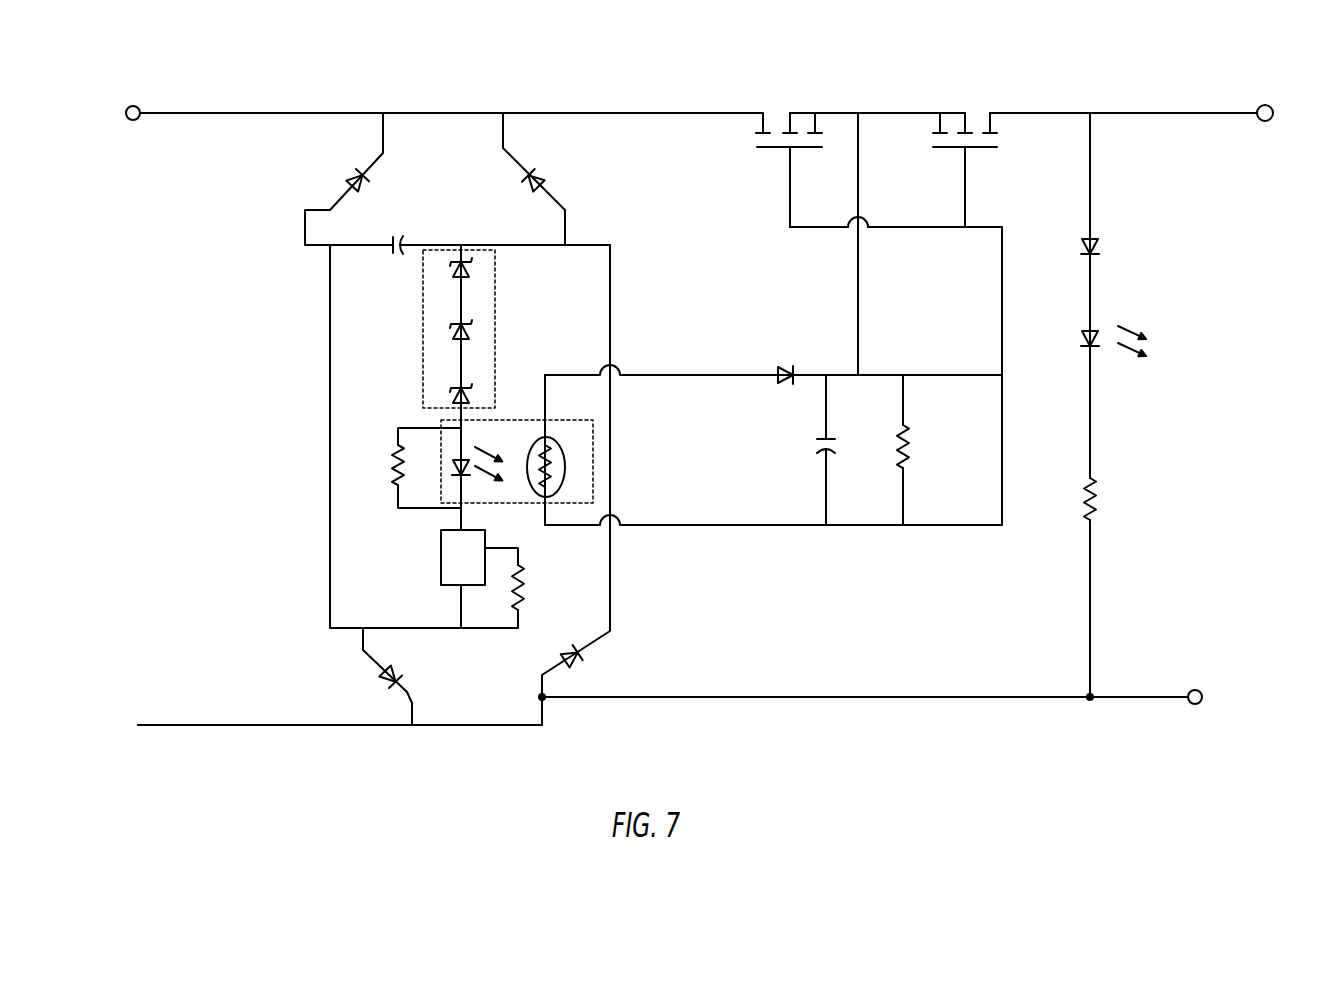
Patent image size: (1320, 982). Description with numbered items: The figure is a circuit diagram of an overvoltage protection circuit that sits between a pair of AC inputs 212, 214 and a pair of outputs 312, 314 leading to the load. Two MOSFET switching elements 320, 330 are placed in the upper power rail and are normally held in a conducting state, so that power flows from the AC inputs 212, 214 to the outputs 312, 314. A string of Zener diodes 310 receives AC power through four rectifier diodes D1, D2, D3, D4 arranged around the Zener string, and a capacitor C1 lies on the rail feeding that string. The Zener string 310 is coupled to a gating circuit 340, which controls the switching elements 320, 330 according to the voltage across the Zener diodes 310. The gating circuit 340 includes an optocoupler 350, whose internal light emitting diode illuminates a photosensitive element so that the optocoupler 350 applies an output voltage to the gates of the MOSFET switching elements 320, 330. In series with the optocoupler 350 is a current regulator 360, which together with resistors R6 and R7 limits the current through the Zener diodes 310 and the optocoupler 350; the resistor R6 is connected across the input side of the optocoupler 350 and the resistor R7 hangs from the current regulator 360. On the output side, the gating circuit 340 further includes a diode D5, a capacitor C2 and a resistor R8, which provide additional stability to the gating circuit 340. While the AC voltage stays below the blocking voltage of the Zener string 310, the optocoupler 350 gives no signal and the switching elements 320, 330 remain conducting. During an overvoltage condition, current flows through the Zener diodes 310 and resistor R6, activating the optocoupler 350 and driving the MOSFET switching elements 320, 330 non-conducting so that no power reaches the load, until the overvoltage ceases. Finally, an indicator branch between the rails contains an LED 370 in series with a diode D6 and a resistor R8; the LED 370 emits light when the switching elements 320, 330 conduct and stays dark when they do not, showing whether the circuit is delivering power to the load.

The AC input 212 is at (198, 114).
The AC input 214 is at (227, 726).
The output 312 is at (1219, 114).
The output 314 is at (1165, 699).
The string of Zener diodes 310 is at (497, 300).
The MOSFET switching element 320 is at (794, 95).
The MOSFET switching element 330 is at (980, 97).
The gating circuit 340 is at (708, 350).
The optocoupler 350 is at (580, 450).
The current regulator 360 is at (441, 562).
The LED 370 is at (1096, 328).
The rectifier diode D1 is at (534, 179).
The rectifier diode D2 is at (383, 676).
The rectifier diode D3 is at (344, 179).
The rectifier diode D4 is at (577, 676).
The diode D5 is at (785, 358).
The diode D6 is at (1107, 246).
The capacitor C1 is at (397, 228).
The capacitor C2 is at (842, 450).
The resistor R6 is at (411, 468).
The resistor R7 is at (520, 588).
The resistor R8 is at (1017, 405).